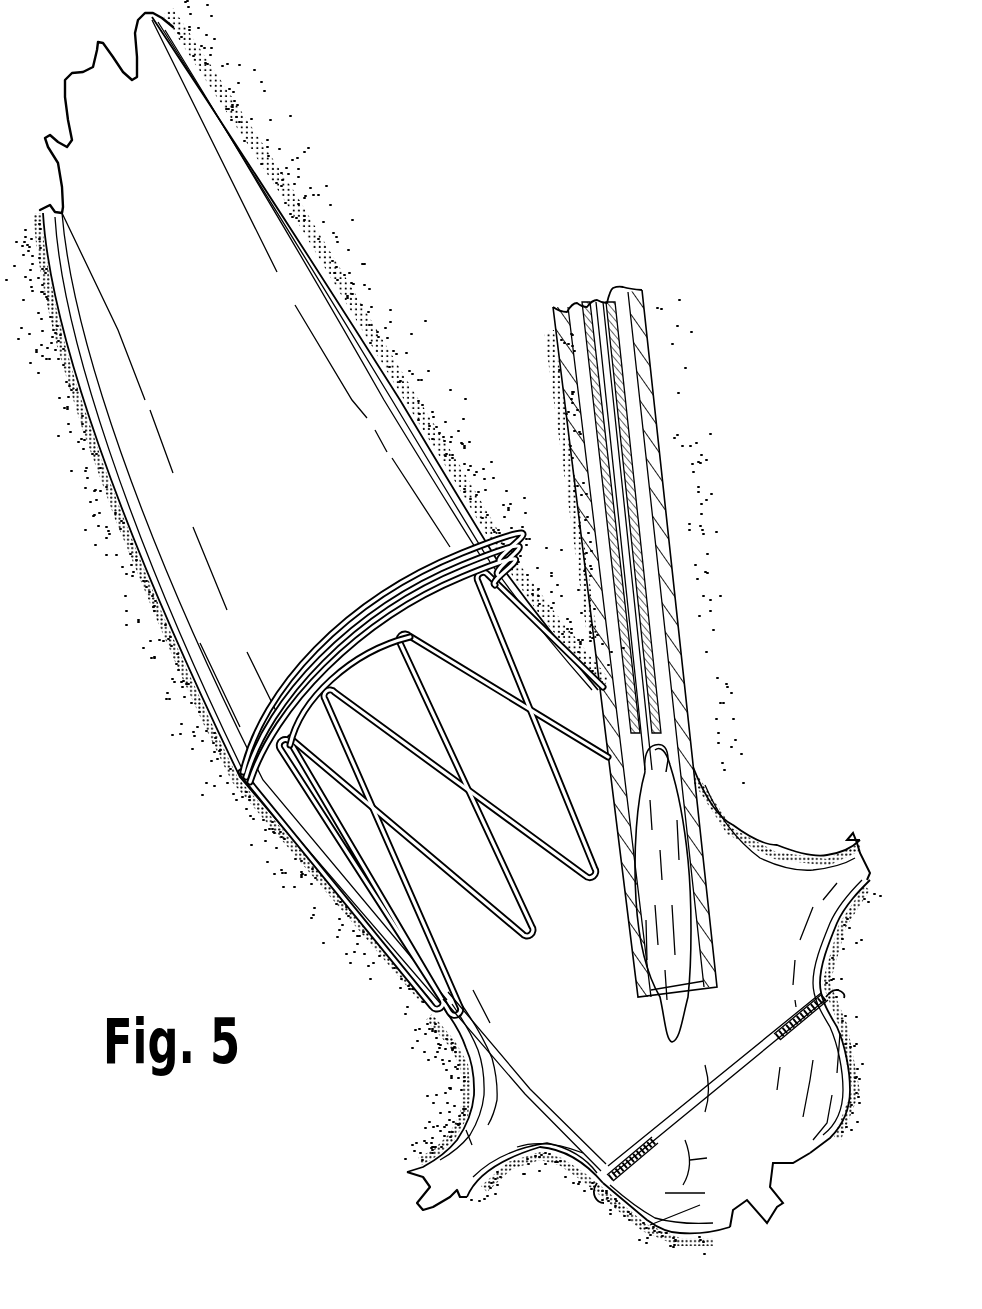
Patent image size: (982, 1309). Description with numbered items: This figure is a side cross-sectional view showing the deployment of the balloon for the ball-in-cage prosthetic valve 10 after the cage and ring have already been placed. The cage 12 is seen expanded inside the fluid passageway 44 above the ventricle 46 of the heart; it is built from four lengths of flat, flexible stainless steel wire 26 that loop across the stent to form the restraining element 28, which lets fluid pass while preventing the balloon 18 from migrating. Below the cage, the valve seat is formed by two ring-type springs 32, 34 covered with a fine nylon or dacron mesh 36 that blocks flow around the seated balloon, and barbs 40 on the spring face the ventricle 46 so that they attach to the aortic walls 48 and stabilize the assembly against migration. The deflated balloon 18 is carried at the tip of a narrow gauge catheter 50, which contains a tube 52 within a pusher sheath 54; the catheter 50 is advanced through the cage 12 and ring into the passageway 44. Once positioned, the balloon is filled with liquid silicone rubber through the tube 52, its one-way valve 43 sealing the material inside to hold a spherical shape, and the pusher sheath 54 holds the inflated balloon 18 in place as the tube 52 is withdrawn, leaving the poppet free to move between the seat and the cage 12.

The prosthetic valve 10 is at (533, 600).
The cage 12 is at (520, 577).
The balloon 18 is at (677, 778).
The stainless steel wire 26 is at (287, 673).
The restraining element 28 is at (417, 560).
The spring 32 is at (820, 990).
The spring 34 is at (647, 1140).
The mesh 36 is at (793, 1013).
The barbs 40 is at (847, 992).
The one-way valve 43 is at (653, 767).
The fluid passageway 44 is at (780, 850).
The ventricle 46 is at (673, 1235).
The aortic walls 48 is at (857, 1053).
The catheter 50 is at (650, 458).
The tube 52 is at (627, 573).
The pusher sheath 54 is at (637, 523).